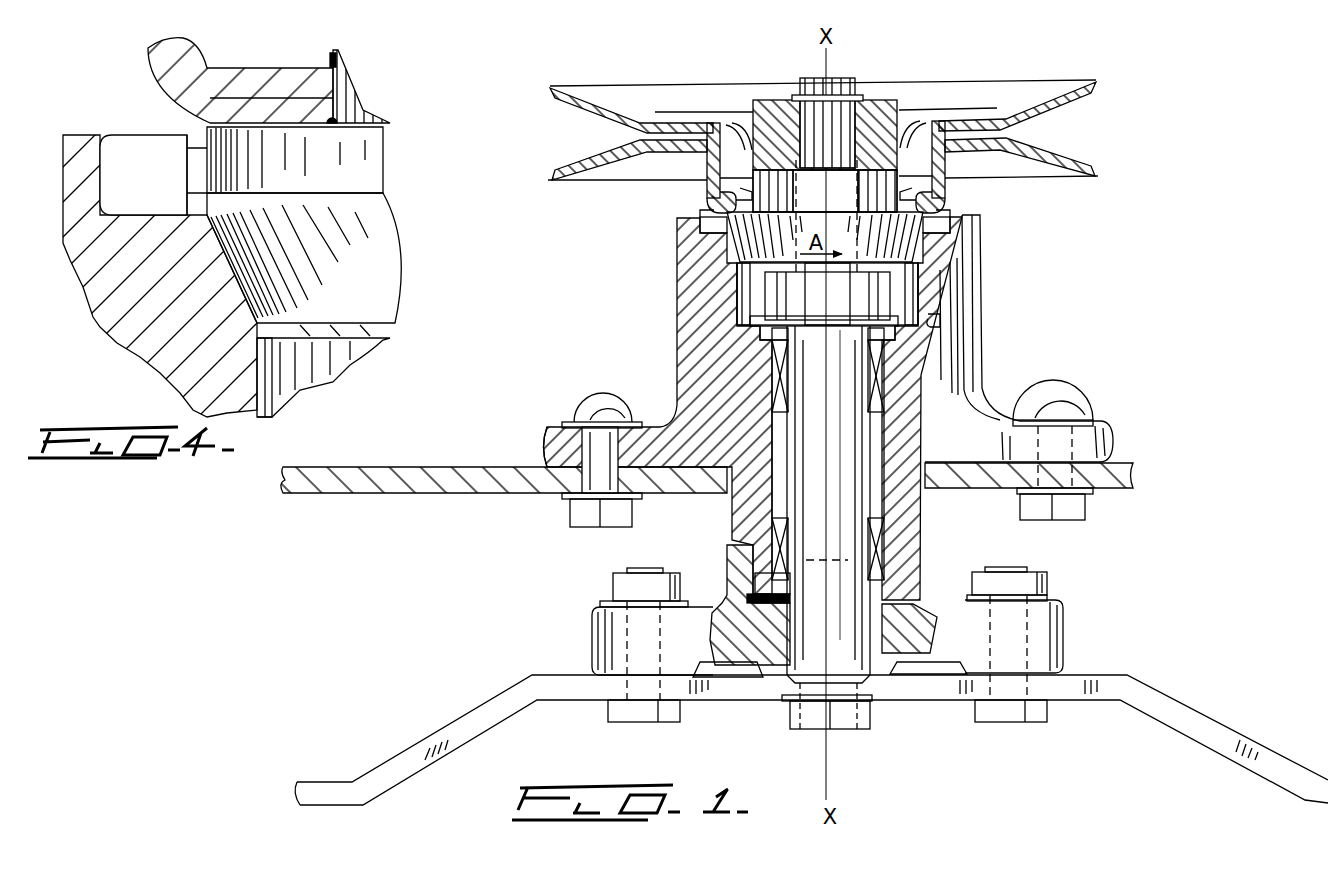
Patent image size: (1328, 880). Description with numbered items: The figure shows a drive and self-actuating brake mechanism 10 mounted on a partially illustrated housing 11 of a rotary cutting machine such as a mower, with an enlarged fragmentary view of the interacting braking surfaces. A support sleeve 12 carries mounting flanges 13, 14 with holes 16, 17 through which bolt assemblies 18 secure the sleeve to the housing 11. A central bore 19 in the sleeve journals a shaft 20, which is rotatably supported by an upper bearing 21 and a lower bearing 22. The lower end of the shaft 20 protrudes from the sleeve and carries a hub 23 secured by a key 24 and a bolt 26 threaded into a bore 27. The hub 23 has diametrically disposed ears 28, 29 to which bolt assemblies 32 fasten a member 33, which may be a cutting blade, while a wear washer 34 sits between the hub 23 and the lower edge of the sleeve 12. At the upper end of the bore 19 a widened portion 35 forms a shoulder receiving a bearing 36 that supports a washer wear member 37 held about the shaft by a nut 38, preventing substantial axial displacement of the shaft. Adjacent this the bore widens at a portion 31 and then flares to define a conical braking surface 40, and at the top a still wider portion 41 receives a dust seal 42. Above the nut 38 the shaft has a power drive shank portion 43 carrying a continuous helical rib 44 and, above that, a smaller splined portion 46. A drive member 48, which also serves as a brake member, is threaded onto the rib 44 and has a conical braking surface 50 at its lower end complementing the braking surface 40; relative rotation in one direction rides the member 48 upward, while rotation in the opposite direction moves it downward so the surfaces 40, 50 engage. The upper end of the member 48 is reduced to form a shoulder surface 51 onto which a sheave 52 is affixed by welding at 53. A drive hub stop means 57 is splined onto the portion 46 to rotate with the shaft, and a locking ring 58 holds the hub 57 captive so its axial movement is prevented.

In FIG. 1, the drive and self-actuating brake mechanism 10 is at (960, 354).
In FIG. 4, the drive and self-actuating brake mechanism 10 is at (107, 298).
In FIG. 1, the housing 11 is at (443, 472).
In FIG. 1, the support sleeve 12 is at (967, 275).
In FIG. 1, the mounting flange 13 is at (1110, 435).
In FIG. 1, the mounting flange 14 is at (553, 443).
In FIG. 1, the hole 16 is at (1080, 408).
In FIG. 1, the hole 17 is at (577, 440).
In FIG. 1, the bolt assembly 18 is at (607, 413).
In FIG. 1, the central bore 19 is at (882, 440).
In FIG. 1, the shaft 20 is at (847, 500).
In FIG. 1, the upper bearing 21 is at (873, 382).
In FIG. 1, the lower bearing 22 is at (877, 538).
In FIG. 1, the hub 23 is at (917, 610).
In FIG. 1, the key 24 is at (878, 682).
In FIG. 1, the bolt 26 is at (837, 717).
In FIG. 1, the bore 27 is at (783, 630).
In FIG. 1, the ear 28 is at (1050, 637).
In FIG. 1, the ear 29 is at (608, 645).
In FIG. 1, the widened bore portion 31 is at (940, 323).
In FIG. 4, the widened bore portion 31 is at (258, 366).
In FIG. 1, the bolt assembly 32 is at (607, 590).
In FIG. 1, the member 33 is at (1153, 700).
In FIG. 1, the wear washer 34 is at (770, 600).
In FIG. 1, the widened portion 35 is at (768, 332).
In FIG. 1, the bearing 36 is at (765, 346).
In FIG. 1, the washer wear member 37 is at (767, 320).
In FIG. 1, the nut 38 is at (907, 298).
In FIG. 1, the braking surface 40 is at (917, 240).
In FIG. 4, the braking surface 40 is at (236, 284).
In FIG. 1, the wider bore portion 41 is at (707, 222).
In FIG. 1, the dust seal 42 is at (707, 233).
In FIG. 4, the dust seal 42 is at (148, 135).
In FIG. 1, the power drive shank portion 43 is at (850, 190).
In FIG. 1, the helical rib 44 is at (817, 272).
In FIG. 1, the splined portion 46 is at (840, 115).
In FIG. 1, the drive member 48 is at (778, 200).
In FIG. 4, the drive member 48 is at (393, 224).
In FIG. 1, the braking surface 50 is at (757, 247).
In FIG. 4, the braking surface 50 is at (358, 280).
In FIG. 1, the shoulder surface 51 is at (923, 223).
In FIG. 4, the shoulder surface 51 is at (330, 122).
In FIG. 1, the sheave 52 is at (1062, 96).
In FIG. 4, the sheave 52 is at (226, 78).
In FIG. 1, the weld 53 is at (730, 196).
In FIG. 1, the drive hub stop means 57 is at (885, 118).
In FIG. 1, the locking ring 58 is at (797, 95).